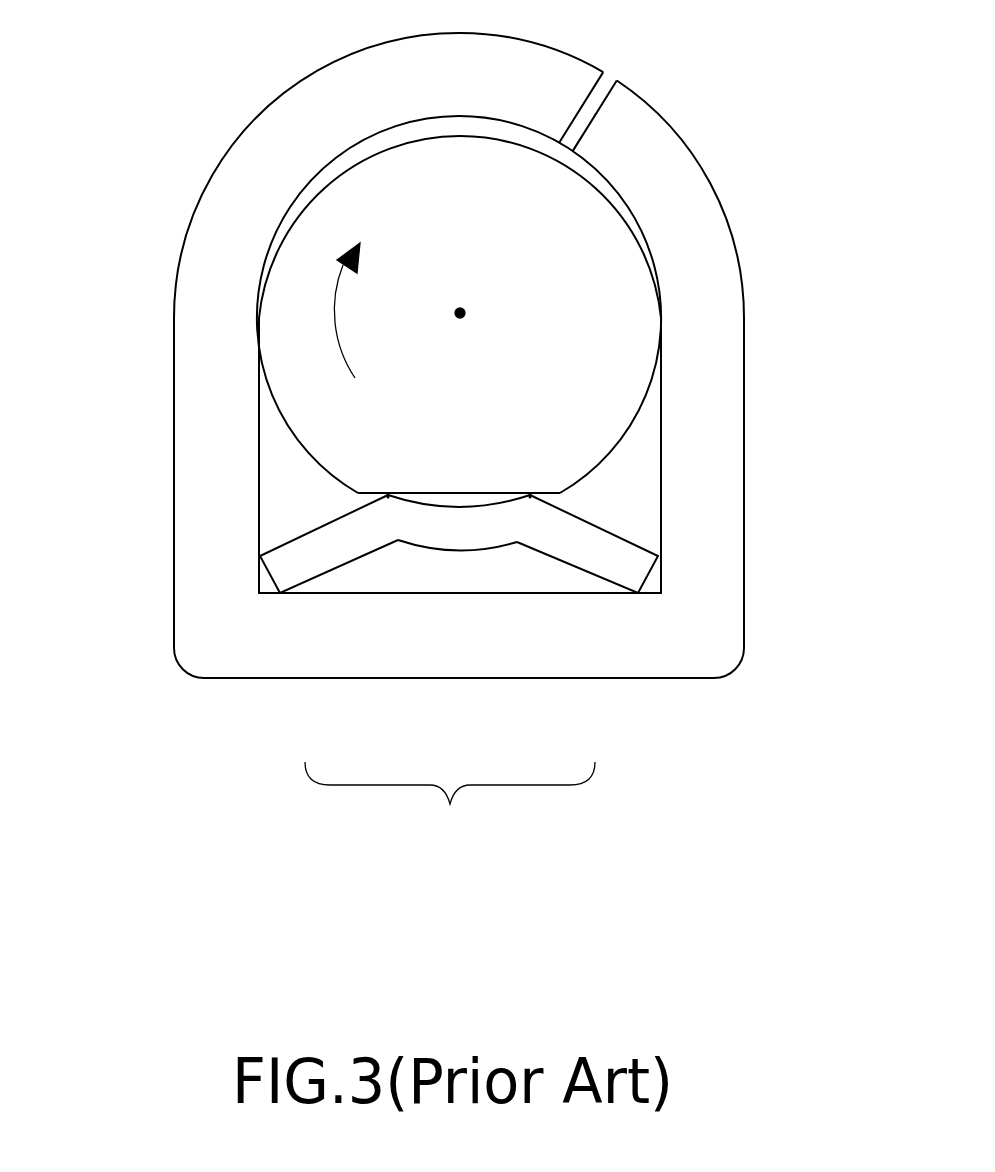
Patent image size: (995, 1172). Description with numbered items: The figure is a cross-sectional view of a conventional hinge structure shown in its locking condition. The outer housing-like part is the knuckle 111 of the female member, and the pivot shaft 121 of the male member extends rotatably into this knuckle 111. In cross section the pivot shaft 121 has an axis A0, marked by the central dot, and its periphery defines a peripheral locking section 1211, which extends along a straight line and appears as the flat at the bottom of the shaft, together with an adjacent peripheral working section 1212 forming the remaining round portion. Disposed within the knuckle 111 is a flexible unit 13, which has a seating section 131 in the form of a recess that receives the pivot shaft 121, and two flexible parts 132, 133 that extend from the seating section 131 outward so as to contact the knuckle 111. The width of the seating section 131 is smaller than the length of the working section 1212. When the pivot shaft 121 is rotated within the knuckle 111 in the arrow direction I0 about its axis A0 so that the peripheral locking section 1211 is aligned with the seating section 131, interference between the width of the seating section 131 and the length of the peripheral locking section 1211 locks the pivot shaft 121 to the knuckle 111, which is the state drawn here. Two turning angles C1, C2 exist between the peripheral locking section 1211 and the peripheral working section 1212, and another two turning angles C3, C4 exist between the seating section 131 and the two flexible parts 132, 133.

The knuckle 111 is at (658, 110).
The peripheral working section 1212 is at (300, 190).
The pivot shaft 121 is at (592, 240).
The peripheral locking section 1211 is at (425, 492).
The axis A0 is at (465, 318).
The arrow direction I0 is at (338, 325).
The seating section 131 is at (463, 540).
The flexible part 132 is at (312, 565).
The flexible part 133 is at (598, 568).
The flexible unit 13 is at (450, 808).
The turning angle C1 is at (388, 495).
The turning angle C2 is at (530, 495).
The turning angle C3 is at (388, 497).
The turning angle C4 is at (530, 497).